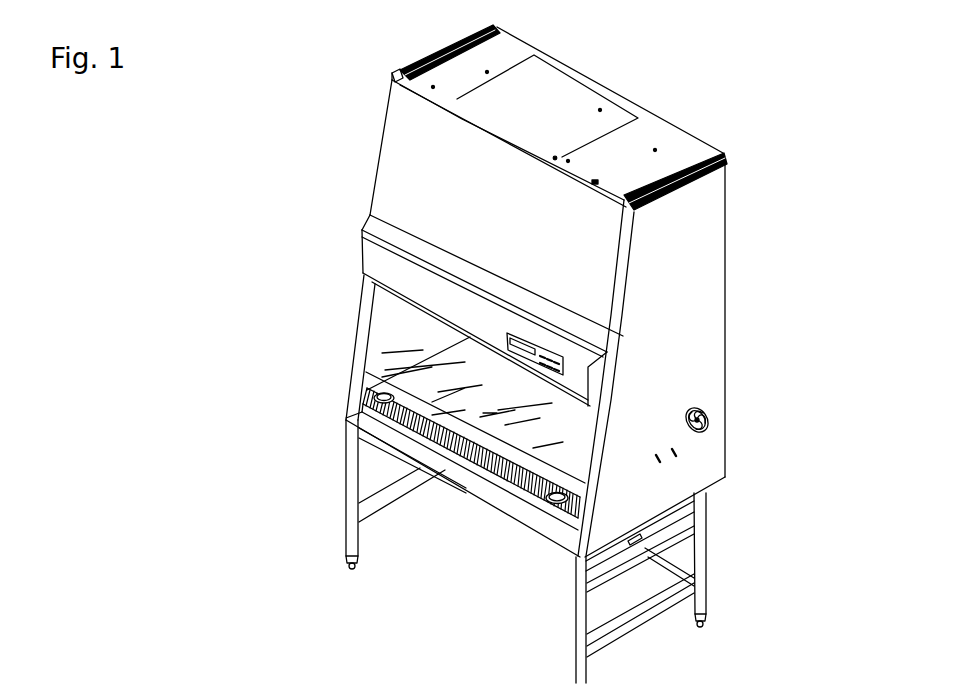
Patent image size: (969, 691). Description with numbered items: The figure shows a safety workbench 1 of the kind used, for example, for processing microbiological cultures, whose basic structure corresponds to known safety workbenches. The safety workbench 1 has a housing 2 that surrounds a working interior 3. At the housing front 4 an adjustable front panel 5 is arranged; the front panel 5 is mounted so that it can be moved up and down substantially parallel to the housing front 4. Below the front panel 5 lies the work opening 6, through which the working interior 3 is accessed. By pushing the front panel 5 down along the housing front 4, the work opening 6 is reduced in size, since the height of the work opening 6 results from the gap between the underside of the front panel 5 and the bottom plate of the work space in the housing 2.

The safety workbench 1 is at (801, 115).
The housing 2 is at (708, 333).
The working interior 3 is at (393, 358).
The housing front 4 is at (355, 197).
The front panel 5 is at (380, 325).
The work opening 6 is at (365, 397).